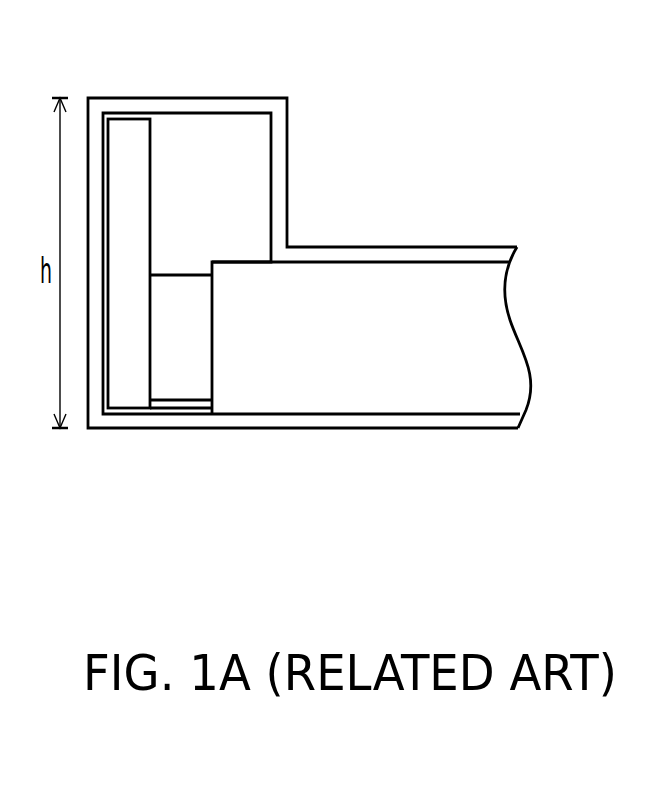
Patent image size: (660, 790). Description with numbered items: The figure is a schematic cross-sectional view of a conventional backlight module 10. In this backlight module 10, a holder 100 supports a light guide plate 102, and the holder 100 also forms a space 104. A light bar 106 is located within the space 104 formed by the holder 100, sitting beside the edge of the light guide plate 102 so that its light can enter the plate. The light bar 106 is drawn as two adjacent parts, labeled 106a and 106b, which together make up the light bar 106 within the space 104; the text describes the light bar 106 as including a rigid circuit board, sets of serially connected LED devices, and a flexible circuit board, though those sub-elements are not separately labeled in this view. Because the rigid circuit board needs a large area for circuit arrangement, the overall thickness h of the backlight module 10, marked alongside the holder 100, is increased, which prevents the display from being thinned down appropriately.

The backlight module 10 is at (538, 523).
The holder 100 is at (282, 182).
The light guide plate 102 is at (307, 398).
The space 104 is at (230, 140).
The light bar 106 is at (160, 335).
The antenna element 106a is at (127, 397).
The antenna substrate 106b is at (183, 397).